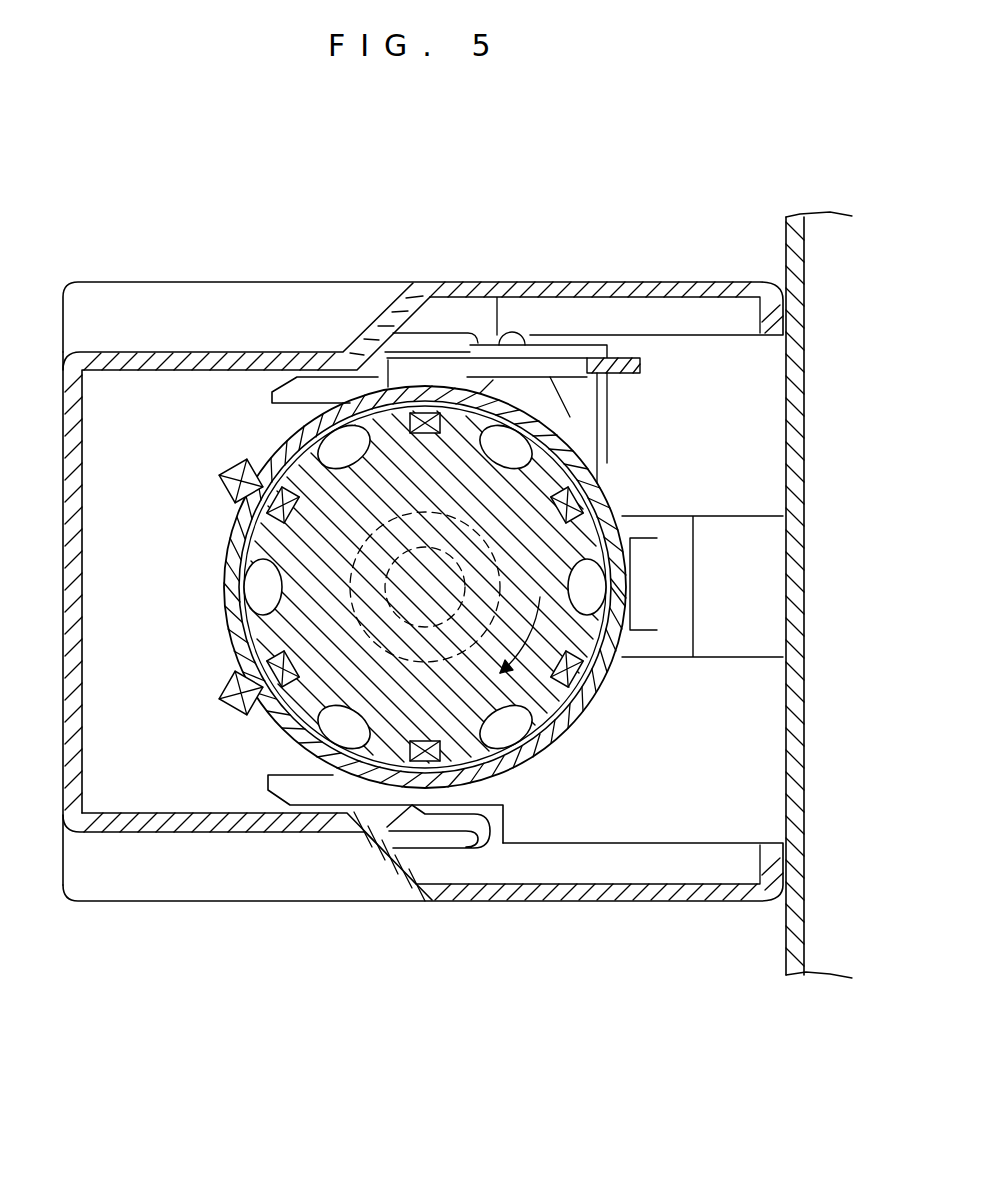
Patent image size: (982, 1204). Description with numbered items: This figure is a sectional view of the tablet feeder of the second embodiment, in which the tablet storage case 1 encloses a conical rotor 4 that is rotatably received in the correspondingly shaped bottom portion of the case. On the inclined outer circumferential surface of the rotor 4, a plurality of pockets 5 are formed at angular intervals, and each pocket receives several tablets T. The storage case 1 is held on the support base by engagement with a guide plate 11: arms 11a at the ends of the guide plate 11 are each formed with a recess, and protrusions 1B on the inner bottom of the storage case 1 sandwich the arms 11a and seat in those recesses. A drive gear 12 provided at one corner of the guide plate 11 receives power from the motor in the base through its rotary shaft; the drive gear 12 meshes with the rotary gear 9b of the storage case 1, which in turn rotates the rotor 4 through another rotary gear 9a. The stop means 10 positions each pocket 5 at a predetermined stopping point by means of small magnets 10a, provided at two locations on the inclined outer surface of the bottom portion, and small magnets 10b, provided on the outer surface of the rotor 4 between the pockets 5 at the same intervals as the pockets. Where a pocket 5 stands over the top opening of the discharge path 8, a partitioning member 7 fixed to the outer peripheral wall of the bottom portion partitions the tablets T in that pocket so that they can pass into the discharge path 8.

The tablet storage case 1 is at (482, 283).
The protrusions 1B is at (412, 820).
The rotor 4 is at (394, 604).
The pockets 5 is at (627, 510).
The partitioning member 7 is at (616, 359).
The discharge path 8 is at (648, 586).
The rotary gear 9a is at (532, 757).
The rotary gear 9b is at (283, 440).
The stop means 10 is at (334, 587).
The small magnets 10a is at (224, 483).
The small magnets 10b is at (262, 510).
The guide plate 11 is at (300, 388).
The arms 11a is at (306, 793).
The drive gear 12 is at (523, 423).
The tablets T is at (240, 590).